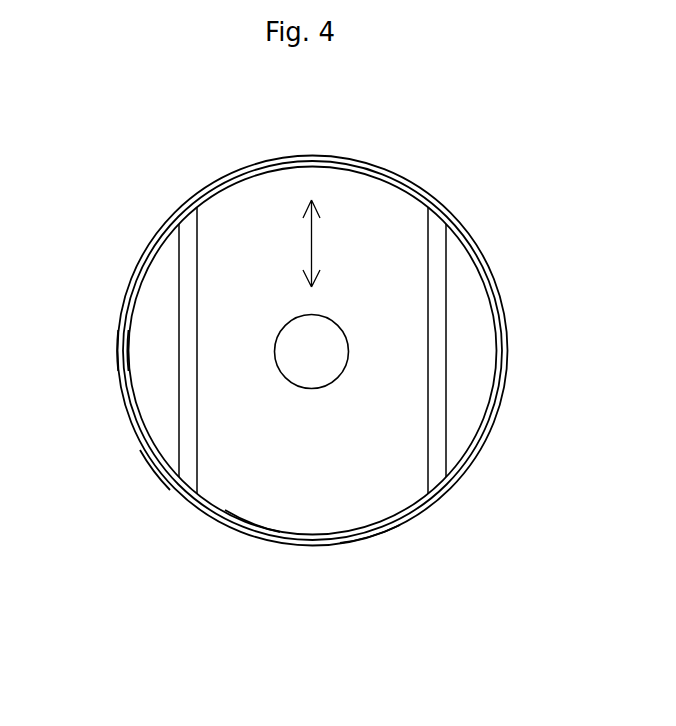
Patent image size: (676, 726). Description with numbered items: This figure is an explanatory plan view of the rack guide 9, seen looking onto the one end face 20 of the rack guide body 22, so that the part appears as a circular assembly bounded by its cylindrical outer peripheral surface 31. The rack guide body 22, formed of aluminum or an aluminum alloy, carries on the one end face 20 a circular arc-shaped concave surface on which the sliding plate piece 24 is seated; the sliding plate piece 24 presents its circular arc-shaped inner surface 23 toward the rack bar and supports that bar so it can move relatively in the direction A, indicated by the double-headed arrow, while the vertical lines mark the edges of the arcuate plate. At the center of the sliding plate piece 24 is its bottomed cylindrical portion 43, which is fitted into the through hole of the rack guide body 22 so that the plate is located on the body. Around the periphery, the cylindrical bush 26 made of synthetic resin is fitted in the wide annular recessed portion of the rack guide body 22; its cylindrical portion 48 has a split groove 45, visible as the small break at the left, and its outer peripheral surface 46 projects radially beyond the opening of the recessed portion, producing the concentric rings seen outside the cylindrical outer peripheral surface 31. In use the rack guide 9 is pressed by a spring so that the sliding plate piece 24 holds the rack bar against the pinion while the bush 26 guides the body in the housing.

The rack guide 9 is at (113, 423).
The one end face 20 is at (467, 421).
The rack guide body 22 is at (148, 284).
The circular arc-shaped inner surface 23 is at (253, 507).
The sliding plate piece 24 is at (212, 213).
The cylindrical bush 26 is at (506, 356).
The cylindrical outer peripheral surface 31 is at (483, 262).
The bottomed cylindrical portion 43 is at (308, 368).
The split groove 45 is at (128, 350).
The outer peripheral surface 46 is at (150, 464).
The cylindrical portion 48 is at (372, 538).
The direction A is at (312, 247).